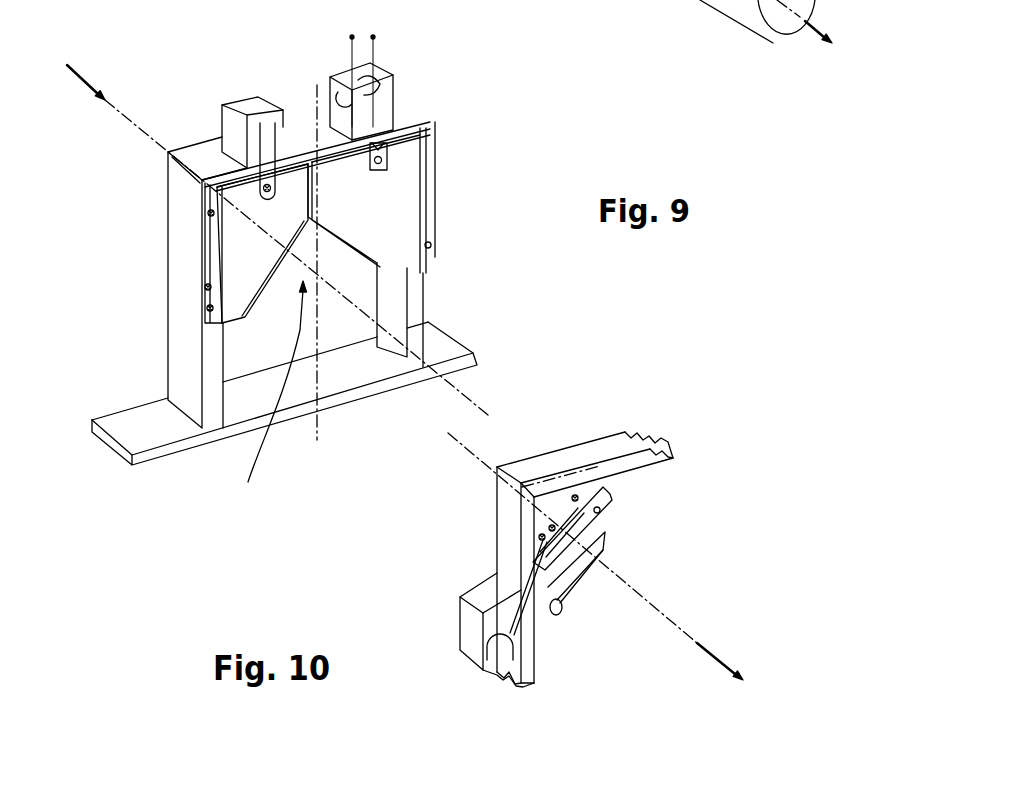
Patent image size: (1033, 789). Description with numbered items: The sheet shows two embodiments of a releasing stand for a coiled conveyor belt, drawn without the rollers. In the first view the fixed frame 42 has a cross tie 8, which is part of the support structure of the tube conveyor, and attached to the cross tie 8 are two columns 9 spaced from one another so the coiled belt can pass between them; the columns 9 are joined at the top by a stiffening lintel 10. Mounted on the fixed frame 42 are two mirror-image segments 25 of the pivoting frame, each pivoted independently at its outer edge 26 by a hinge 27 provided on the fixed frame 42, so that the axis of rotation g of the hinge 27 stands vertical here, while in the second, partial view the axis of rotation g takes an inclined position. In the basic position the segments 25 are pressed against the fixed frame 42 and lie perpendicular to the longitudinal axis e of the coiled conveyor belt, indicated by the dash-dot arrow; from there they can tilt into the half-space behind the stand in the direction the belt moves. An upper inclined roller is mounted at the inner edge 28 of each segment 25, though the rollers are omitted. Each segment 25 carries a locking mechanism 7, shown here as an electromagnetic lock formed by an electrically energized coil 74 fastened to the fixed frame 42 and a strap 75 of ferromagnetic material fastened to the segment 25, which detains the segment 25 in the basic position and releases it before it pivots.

In FIG. 9, the locking mechanism 7 is at (213, 119).
In FIG. 10, the locking mechanism 7 is at (460, 644).
In FIG. 9, the cross tie 8 is at (145, 427).
In FIG. 9, the column 9 is at (185, 372).
In FIG. 10, the column 9 is at (508, 570).
In FIG. 9, the stiffening lintel 10 is at (302, 140).
In FIG. 10, the stiffening lintel 10 is at (623, 450).
In FIG. 9, the segment 25 is at (258, 263).
In FIG. 10, the segment 25 is at (583, 532).
In FIG. 9, the outer edge 26 is at (239, 243).
In FIG. 10, the outer edge 26 is at (597, 512).
In FIG. 9, the hinge 27 is at (207, 313).
In FIG. 10, the hinge 27 is at (543, 540).
In FIG. 9, the inner edge 28 is at (410, 280).
In FIG. 9, the fixed frame 42 is at (442, 135).
In FIG. 10, the fixed frame 42 is at (674, 431).
In FIG. 9, the electrically energized coil 74 is at (368, 102).
In FIG. 9, the strap 75 is at (392, 163).
In FIG. 10, the strap 75 is at (510, 633).
In FIG. 9, the axis of rotation g is at (207, 287).
In FIG. 10, the axis of rotation g is at (540, 550).
In FIG. 9, the longitudinal axis e is at (80, 78).
In FIG. 10, the longitudinal axis e is at (667, 611).